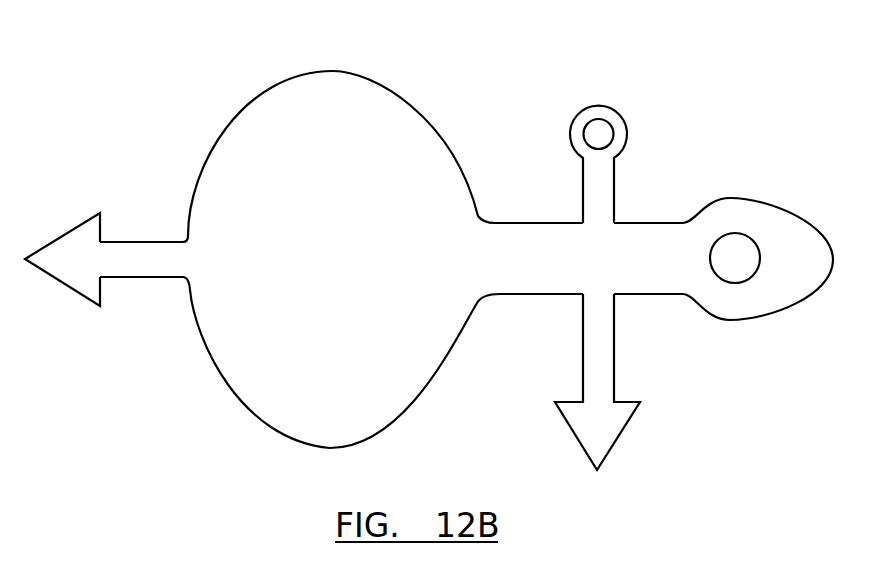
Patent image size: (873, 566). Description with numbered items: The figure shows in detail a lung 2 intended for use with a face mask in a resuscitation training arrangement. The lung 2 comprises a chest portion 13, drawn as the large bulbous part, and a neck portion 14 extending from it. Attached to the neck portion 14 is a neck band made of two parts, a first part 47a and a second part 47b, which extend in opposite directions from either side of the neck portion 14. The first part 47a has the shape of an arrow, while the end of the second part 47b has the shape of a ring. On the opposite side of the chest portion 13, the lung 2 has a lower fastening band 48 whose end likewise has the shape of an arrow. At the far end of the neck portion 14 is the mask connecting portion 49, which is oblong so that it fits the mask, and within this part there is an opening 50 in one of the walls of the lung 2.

The lung 2 is at (445, 135).
The chest portion 13 is at (267, 87).
The neck portion 14 is at (523, 296).
The first part of neck band 47a is at (613, 357).
The second part of neck band 47b is at (583, 190).
The lower fastening band 48 is at (136, 265).
The mask connecting portion 49 is at (733, 198).
The opening 50 is at (733, 273).